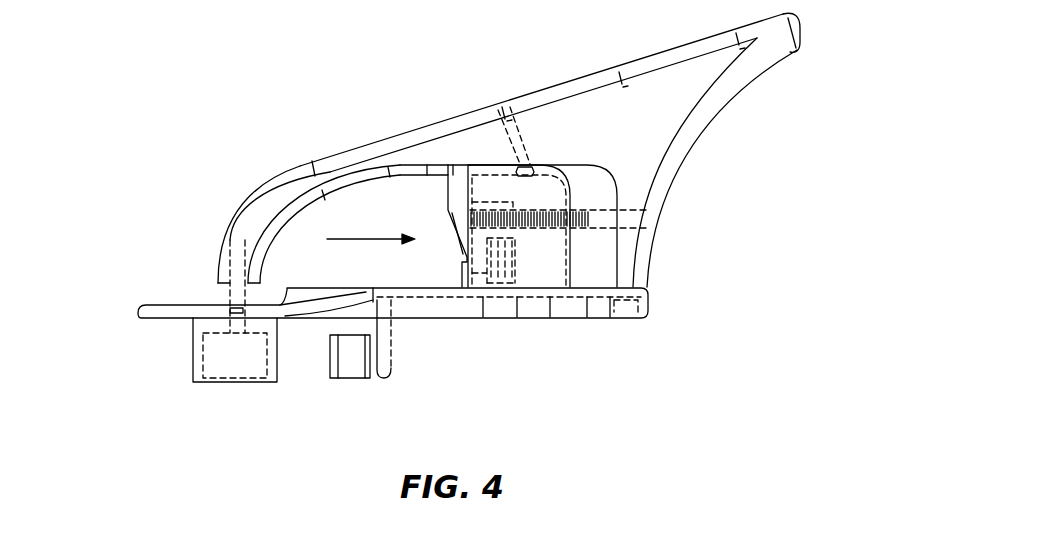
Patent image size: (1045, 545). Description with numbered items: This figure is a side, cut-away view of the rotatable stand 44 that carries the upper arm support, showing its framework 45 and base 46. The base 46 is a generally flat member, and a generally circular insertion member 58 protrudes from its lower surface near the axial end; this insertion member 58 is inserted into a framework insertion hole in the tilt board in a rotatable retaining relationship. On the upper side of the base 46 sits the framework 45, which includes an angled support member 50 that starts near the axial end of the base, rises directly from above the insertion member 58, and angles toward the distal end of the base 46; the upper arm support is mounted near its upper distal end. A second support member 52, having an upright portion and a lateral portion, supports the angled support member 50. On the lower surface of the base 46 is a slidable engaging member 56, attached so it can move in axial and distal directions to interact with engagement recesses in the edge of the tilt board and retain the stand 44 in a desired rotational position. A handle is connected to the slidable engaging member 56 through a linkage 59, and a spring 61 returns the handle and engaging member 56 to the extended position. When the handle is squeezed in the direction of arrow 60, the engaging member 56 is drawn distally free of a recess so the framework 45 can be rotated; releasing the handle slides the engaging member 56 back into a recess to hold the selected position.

The rotatable stand 44 is at (413, 103).
The framework 45 is at (291, 196).
The base 46 is at (160, 305).
The angled support member 50 is at (432, 150).
The second support member 52 is at (658, 170).
The slidable engaging member 56 is at (353, 366).
The insertion member 58 is at (193, 378).
The linkage 59 is at (497, 322).
The arrow 60 is at (353, 241).
The spring 61 is at (587, 232).